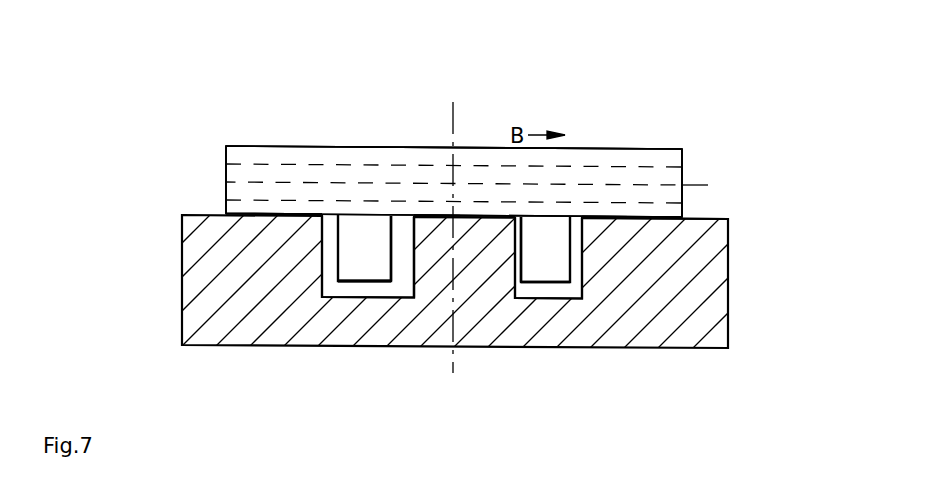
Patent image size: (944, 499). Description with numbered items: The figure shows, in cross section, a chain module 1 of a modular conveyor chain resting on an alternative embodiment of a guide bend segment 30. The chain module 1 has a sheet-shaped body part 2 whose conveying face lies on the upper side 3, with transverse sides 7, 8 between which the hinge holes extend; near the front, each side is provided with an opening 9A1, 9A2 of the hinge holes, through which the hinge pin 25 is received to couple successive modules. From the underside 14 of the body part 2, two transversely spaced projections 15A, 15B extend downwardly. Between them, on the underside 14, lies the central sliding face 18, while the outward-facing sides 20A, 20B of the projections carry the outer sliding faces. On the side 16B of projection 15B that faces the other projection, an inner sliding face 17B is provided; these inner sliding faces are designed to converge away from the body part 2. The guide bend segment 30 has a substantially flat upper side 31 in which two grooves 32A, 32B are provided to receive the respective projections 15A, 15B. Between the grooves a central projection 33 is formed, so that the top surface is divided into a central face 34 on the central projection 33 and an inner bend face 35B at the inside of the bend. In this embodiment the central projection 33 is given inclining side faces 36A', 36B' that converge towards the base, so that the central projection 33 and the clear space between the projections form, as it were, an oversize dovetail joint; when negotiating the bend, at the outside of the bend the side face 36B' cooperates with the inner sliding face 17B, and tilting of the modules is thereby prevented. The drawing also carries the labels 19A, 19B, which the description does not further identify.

The chain module 1 is at (444, 118).
The sheet-shaped body part 2 is at (672, 158).
The upper side 3 is at (503, 147).
The side of the body part 7 is at (682, 207).
The side of the body part 8 is at (225, 207).
The opening 9A1 is at (225, 190).
The opening 9A2 is at (682, 177).
The underside 14 is at (488, 217).
The projection 15A is at (538, 268).
The projection 15B is at (365, 257).
The side of the projection facing the other projection 16B is at (388, 280).
The inner sliding face 17B is at (388, 280).
The central sliding face 18 is at (406, 265).
The support region A 19A is at (635, 220).
The support region B 19B is at (303, 215).
The side of the projection facing away 20A is at (580, 250).
The side of the projection facing away 20B is at (322, 284).
The hinge pin 25 is at (605, 177).
The guide bend segment 30 is at (470, 326).
The upper side of the guide bend segment 31 is at (703, 218).
The groove 32A is at (560, 292).
The groove 32B is at (362, 290).
The central projection 33 is at (477, 270).
The central face 34 is at (437, 215).
The inner bend face 35B is at (260, 214).
The inclining side face 36A' is at (567, 160).
The inclining side face 36B' is at (458, 349).